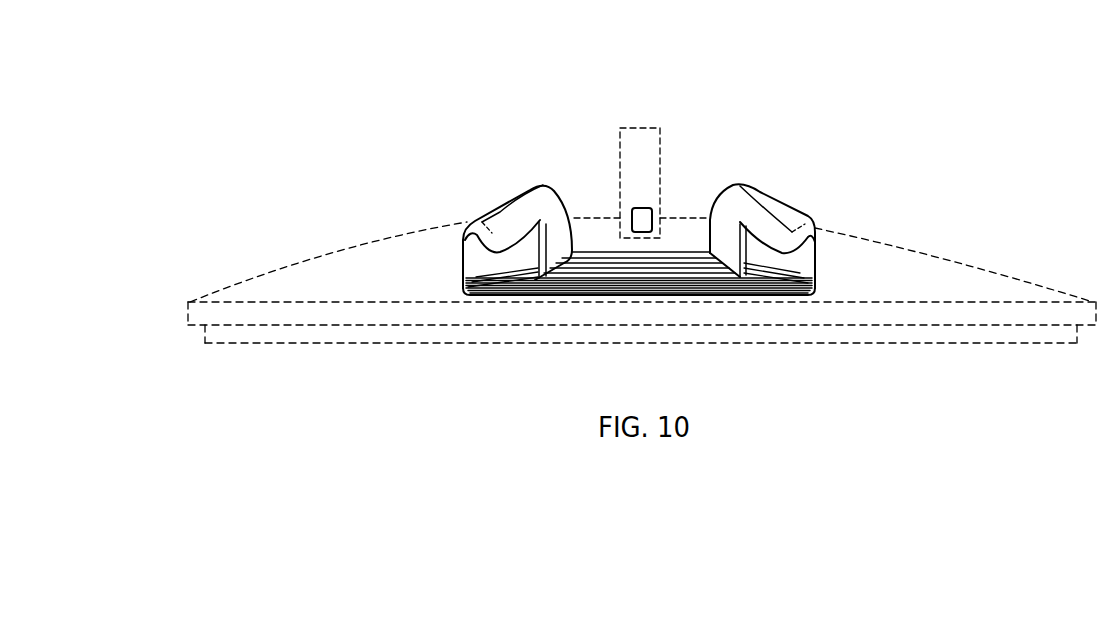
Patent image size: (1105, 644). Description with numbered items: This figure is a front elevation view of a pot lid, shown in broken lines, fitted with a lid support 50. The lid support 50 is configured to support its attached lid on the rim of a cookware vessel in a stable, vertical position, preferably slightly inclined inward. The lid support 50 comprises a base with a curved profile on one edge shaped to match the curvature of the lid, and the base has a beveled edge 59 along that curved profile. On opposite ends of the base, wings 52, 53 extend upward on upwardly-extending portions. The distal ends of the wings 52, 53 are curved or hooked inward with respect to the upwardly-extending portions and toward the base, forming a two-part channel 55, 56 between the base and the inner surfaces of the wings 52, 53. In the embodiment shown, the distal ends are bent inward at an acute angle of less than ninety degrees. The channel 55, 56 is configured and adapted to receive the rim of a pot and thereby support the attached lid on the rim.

The lid support 50 is at (597, 252).
The wing 52 is at (502, 212).
The wing 53 is at (780, 213).
The channel 55 is at (480, 265).
The channel 56 is at (800, 255).
The beveled edge 59 is at (725, 285).